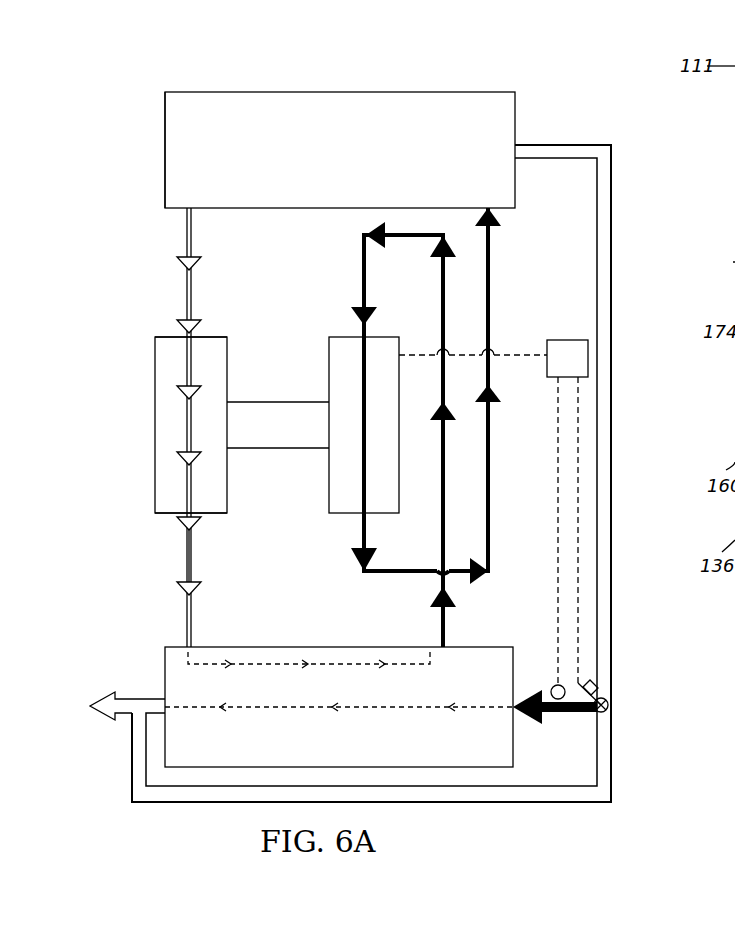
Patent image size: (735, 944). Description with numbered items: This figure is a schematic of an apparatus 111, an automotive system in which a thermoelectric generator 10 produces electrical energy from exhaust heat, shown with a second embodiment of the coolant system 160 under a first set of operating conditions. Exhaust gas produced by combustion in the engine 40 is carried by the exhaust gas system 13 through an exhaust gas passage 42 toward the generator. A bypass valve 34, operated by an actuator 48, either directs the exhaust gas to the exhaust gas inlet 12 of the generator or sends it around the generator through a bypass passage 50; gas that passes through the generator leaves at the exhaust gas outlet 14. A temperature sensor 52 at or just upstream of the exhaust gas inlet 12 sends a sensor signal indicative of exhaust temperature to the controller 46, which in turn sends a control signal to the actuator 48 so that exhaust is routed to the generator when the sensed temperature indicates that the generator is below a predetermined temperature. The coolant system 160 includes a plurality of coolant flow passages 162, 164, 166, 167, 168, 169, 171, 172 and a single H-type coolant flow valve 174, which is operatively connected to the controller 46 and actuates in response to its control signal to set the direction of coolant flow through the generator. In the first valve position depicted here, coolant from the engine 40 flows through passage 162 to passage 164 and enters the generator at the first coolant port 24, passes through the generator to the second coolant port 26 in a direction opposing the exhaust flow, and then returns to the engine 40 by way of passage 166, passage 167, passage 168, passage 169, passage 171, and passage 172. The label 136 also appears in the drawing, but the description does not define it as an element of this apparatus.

The apparatus 111 is at (138, 98).
The engine 40 is at (353, 163).
The exhaust gas system 13 is at (626, 167).
The exhaust gas passage 42 is at (612, 237).
The bypass passage 50 is at (490, 803).
The exhaust gas outlet 14 is at (163, 697).
The thermoelectric generator 10 is at (470, 645).
The first coolant port 24 is at (192, 646).
The exhaust gas inlet 12 is at (517, 715).
The coolant system 160 is at (128, 382).
The phase change material 136 is at (147, 452).
The H-type coolant flow valve 174 is at (155, 360).
The coolant flow passage 162 is at (186, 290).
The coolant flow passage 164 is at (186, 555).
The coolant flow passage 166 is at (447, 622).
The coolant flow passage 167 is at (412, 240).
The coolant flow passage 168 is at (363, 297).
The coolant flow passage 169 is at (363, 535).
The coolant flow passage 171 is at (385, 572).
The coolant flow passage 172 is at (490, 473).
The second coolant port 26 is at (443, 645).
The controller 46 is at (580, 371).
The temperature sensor 52 is at (555, 684).
The actuator 48 is at (598, 690).
The bypass valve 34 is at (608, 700).